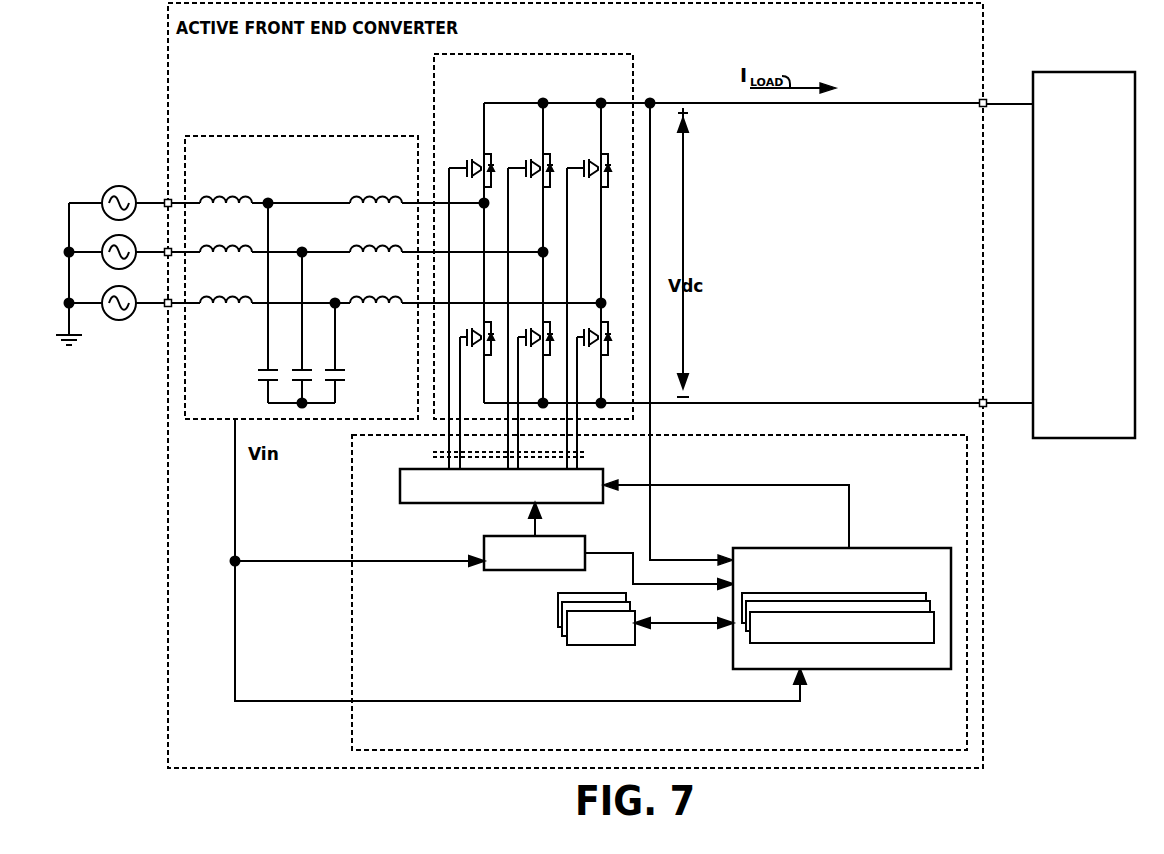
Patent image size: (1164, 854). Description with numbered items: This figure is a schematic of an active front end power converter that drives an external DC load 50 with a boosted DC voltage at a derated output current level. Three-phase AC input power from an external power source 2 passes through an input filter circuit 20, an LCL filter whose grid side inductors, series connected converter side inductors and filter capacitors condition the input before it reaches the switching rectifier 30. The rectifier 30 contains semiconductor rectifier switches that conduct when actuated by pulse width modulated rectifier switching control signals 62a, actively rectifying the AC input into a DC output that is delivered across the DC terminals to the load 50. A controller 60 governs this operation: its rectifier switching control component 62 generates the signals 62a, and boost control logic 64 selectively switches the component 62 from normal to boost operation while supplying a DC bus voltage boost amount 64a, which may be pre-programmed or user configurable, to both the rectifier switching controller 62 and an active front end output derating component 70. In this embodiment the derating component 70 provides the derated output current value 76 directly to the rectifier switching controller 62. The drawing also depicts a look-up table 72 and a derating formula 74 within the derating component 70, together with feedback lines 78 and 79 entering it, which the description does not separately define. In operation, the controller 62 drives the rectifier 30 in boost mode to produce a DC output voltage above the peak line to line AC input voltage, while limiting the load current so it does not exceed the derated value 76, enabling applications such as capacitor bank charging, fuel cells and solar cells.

The power source 2 is at (100, 181).
The input filter circuit 20 is at (303, 136).
The switching rectifier 30 is at (535, 54).
The DC load 50 is at (1083, 72).
The controller 60 is at (352, 729).
The rectifier switching control component 62 is at (400, 489).
The rectifier switching control signal 62a is at (434, 452).
The boost control component 64 is at (484, 548).
The DC bus voltage boost amount 64a is at (530, 526).
The active front end output derating component 70 is at (812, 548).
The look-up table 72 is at (536, 617).
The derating formula 74 is at (738, 656).
The derated output current value 76 is at (849, 512).
The DC bus voltage feedback line 78 is at (650, 458).
The input voltage feedback line 79 is at (667, 701).